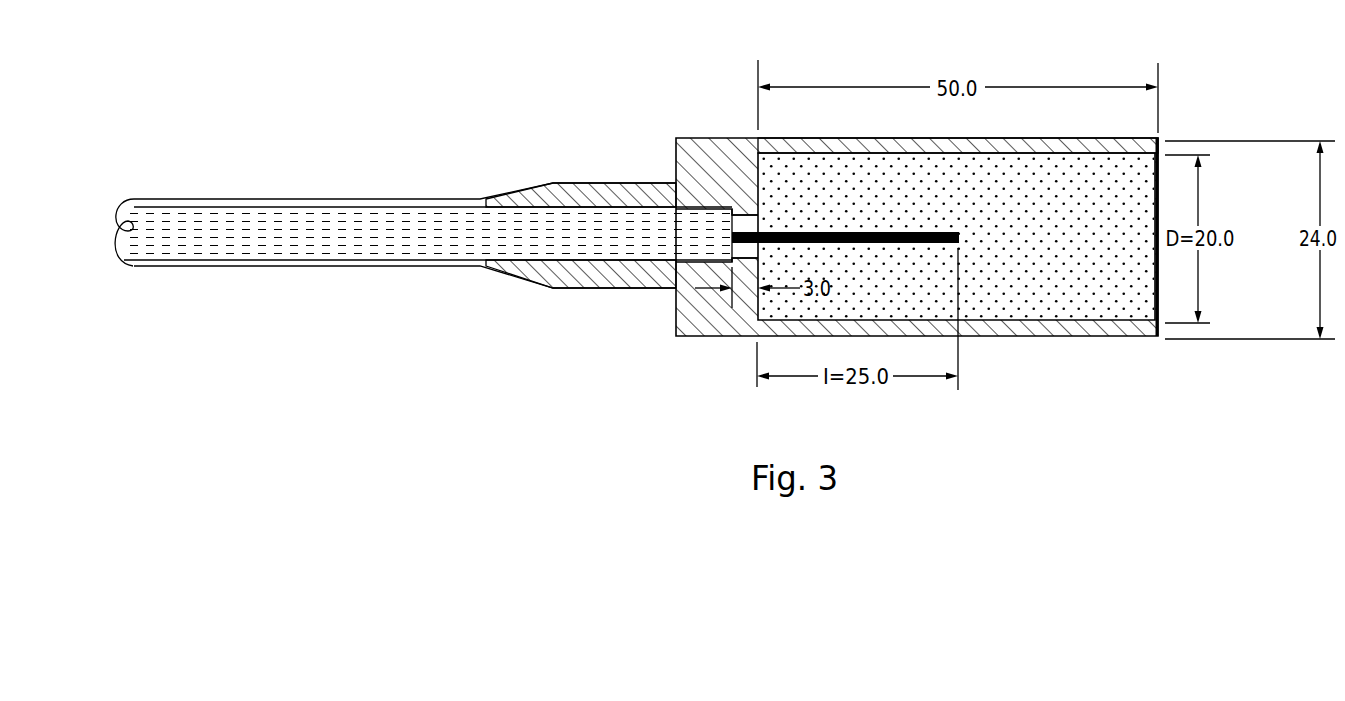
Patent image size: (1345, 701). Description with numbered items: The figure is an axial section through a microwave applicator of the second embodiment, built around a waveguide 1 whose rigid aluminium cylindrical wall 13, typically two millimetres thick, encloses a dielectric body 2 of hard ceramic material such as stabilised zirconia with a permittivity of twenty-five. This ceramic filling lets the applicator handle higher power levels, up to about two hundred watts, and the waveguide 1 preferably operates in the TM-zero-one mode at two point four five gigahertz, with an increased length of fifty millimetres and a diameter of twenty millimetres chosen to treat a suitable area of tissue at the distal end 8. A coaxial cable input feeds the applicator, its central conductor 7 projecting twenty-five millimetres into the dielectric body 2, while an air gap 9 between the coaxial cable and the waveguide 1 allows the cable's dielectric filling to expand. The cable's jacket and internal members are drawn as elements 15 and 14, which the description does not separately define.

The waveguide 1 is at (1099, 351).
The dielectric body 2 is at (812, 173).
The central conductor 7 is at (915, 244).
The distal end 8 is at (1162, 206).
The air gap 9 is at (745, 218).
The cylindrical wall 13 is at (1062, 148).
The fiber buffer / strength members 14 is at (363, 247).
The cable jacket 15 is at (358, 205).